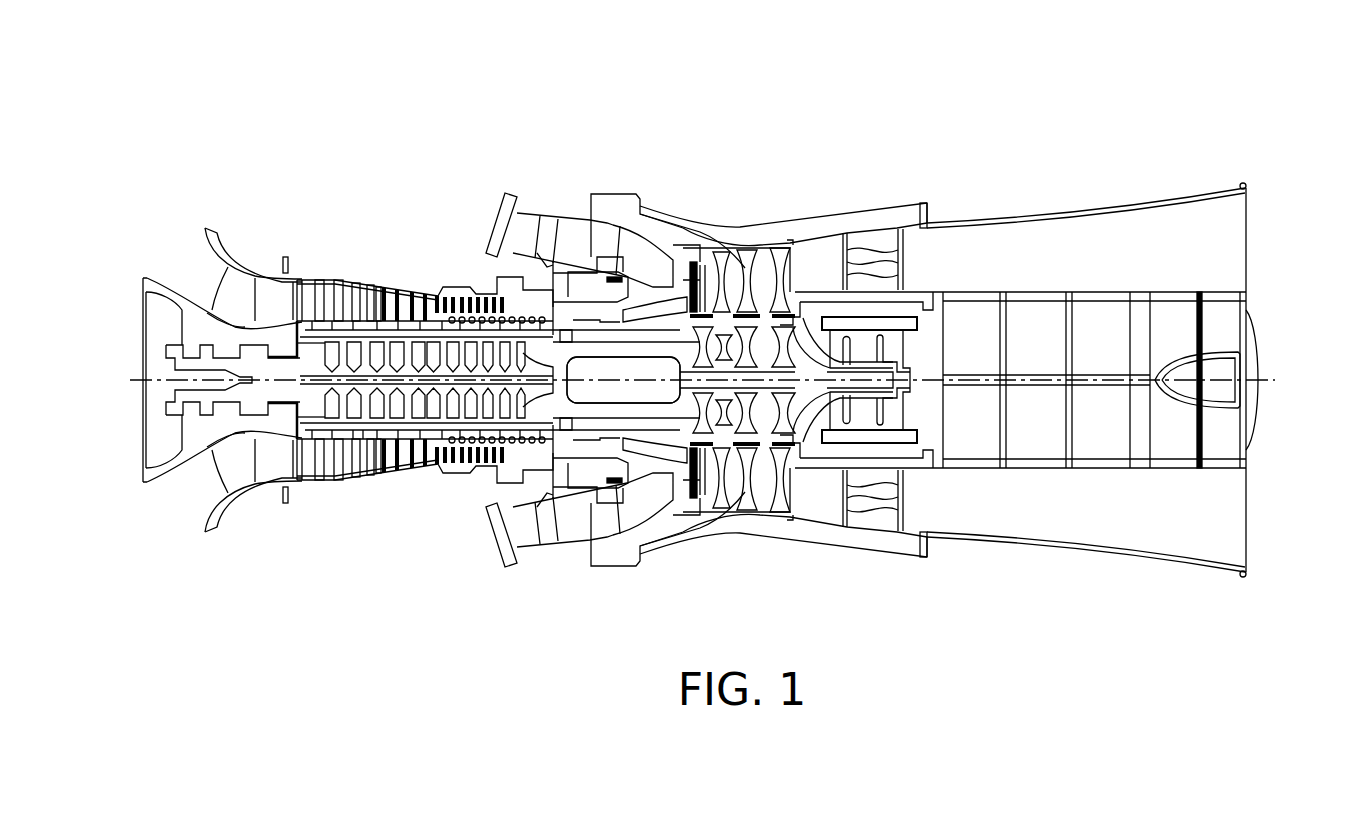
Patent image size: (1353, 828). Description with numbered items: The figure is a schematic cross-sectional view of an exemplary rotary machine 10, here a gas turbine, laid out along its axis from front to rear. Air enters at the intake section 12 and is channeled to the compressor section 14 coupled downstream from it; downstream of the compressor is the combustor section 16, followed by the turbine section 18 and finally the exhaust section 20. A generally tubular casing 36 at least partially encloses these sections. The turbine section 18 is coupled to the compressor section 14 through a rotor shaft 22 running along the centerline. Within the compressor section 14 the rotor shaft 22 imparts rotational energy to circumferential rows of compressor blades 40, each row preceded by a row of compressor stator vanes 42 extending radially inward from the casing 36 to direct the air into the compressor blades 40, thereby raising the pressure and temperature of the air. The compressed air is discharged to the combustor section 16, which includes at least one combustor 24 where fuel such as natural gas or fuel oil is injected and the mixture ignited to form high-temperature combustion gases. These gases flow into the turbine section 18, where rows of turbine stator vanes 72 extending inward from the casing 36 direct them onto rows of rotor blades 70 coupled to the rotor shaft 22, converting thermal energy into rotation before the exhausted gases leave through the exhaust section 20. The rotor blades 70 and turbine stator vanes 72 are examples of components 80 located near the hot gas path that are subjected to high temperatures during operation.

The rotary machine 10 is at (530, 145).
The intake section 12 is at (178, 250).
The compressor section 14 is at (380, 258).
The combustor section 16 is at (550, 120).
The turbine section 18 is at (733, 118).
The exhaust section 20 is at (1040, 155).
The rotor shaft 22 is at (862, 360).
The combustor 24 is at (580, 548).
The casing 36 is at (803, 230).
The compressor blades 40 is at (357, 457).
The compressor stator vanes 42 is at (345, 457).
The rotor blades 70 is at (758, 258).
The turbine stator vanes 72 is at (720, 258).
The components 80 is at (737, 380).